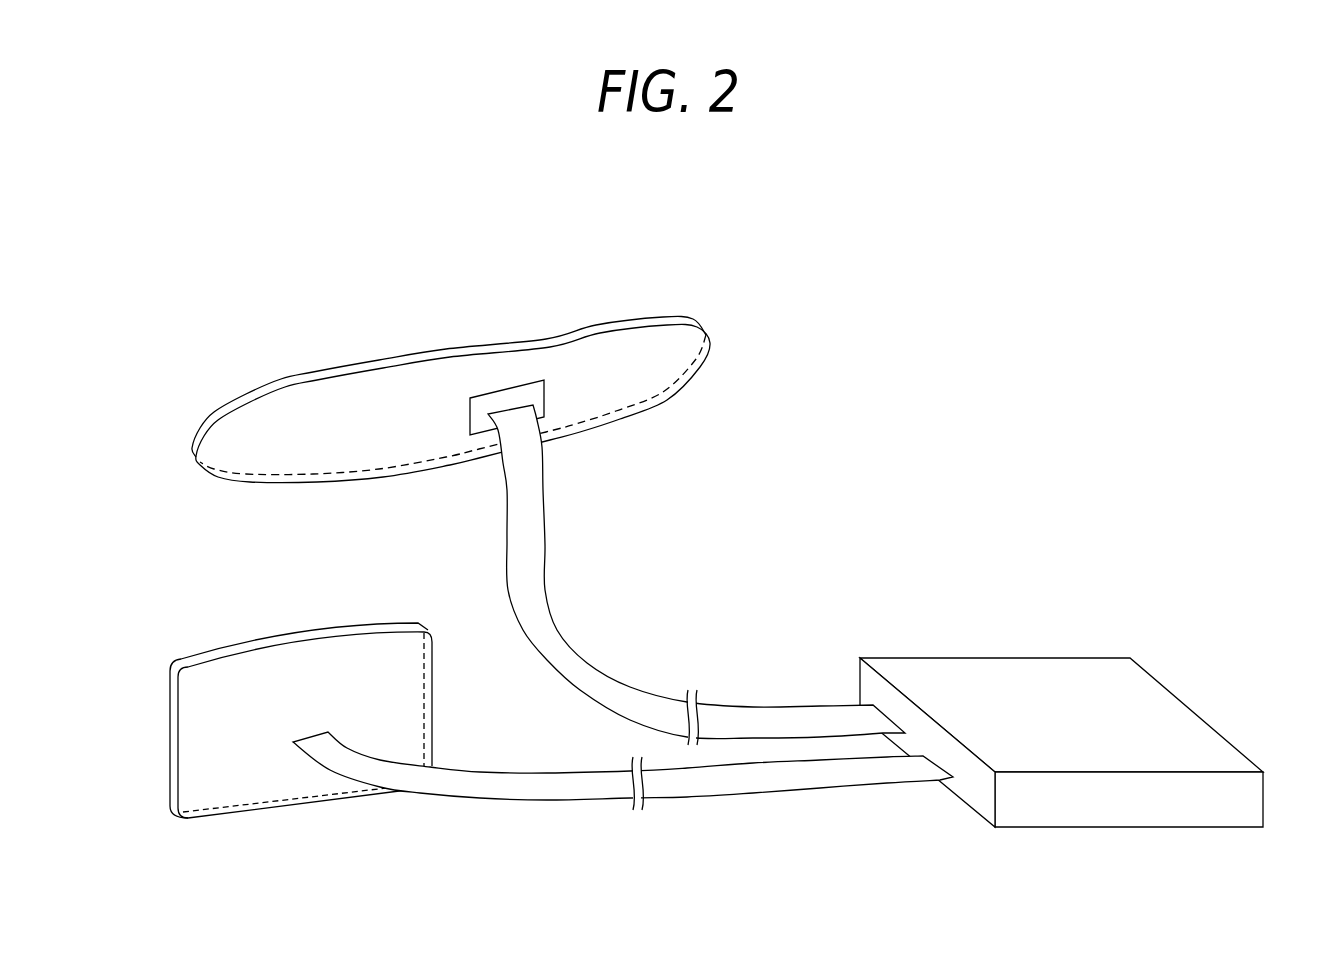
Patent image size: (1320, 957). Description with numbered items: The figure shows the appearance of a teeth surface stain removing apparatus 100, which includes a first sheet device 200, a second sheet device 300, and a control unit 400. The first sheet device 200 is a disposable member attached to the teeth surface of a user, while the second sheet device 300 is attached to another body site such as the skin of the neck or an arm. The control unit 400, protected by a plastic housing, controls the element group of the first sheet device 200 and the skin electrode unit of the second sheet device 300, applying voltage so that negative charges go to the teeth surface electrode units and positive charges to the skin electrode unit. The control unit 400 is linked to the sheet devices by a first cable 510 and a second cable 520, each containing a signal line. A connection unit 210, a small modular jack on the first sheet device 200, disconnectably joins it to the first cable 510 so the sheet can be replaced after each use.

The teeth surface stain removing apparatus 100 is at (952, 326).
The first sheet device 200 is at (575, 333).
The connection unit 210 is at (505, 398).
The second sheet device 300 is at (285, 650).
The control unit 400 is at (1038, 667).
The first cable 510 is at (748, 715).
The second cable 520 is at (788, 780).